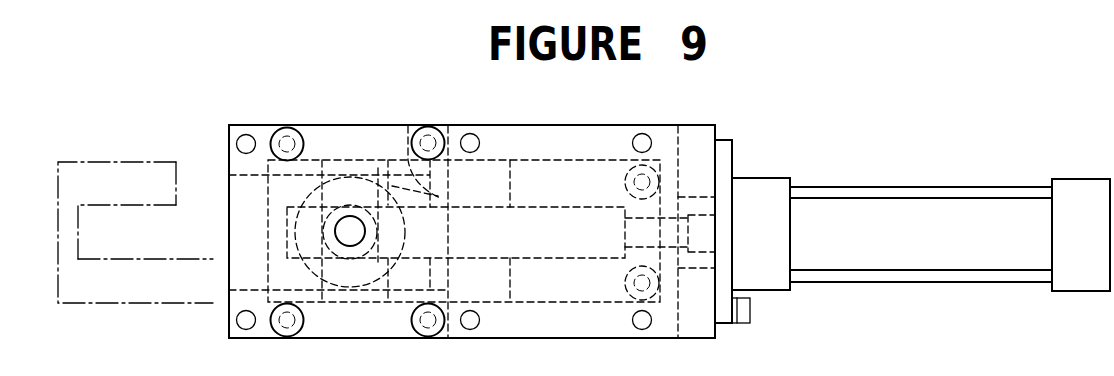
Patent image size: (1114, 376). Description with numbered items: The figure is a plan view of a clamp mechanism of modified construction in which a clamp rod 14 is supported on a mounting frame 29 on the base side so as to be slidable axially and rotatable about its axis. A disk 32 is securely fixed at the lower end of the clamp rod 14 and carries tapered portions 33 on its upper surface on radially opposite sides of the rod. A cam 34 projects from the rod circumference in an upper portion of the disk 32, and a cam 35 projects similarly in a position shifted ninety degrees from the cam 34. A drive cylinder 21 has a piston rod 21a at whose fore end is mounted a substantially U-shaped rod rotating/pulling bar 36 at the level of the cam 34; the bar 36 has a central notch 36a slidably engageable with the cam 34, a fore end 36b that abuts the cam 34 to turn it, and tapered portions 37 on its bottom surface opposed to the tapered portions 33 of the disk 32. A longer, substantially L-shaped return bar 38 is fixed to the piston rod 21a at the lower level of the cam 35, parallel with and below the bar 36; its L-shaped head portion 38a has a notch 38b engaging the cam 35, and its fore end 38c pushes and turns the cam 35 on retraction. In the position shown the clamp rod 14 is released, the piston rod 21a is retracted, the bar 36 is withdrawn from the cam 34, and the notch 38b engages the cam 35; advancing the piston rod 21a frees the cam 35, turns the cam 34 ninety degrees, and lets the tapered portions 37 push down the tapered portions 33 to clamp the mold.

The clamp rod 14 is at (350, 230).
The drive cylinder 21 is at (913, 203).
The piston rod 21a is at (697, 217).
The mounting frame 29 is at (367, 147).
The disk 32 is at (316, 288).
The tapered portions 33 is at (300, 243).
The cam 34 is at (322, 188).
The cam 35 is at (397, 240).
The rod rotating/pulling bar 36 is at (628, 158).
The notch 36a is at (533, 212).
The fore end 36b is at (408, 123).
The tapered portions 37 is at (592, 168).
The return bar 38 is at (153, 273).
The L-shaped head portion 38a is at (103, 187).
The notch 38b is at (107, 232).
The fore end 38c is at (430, 197).